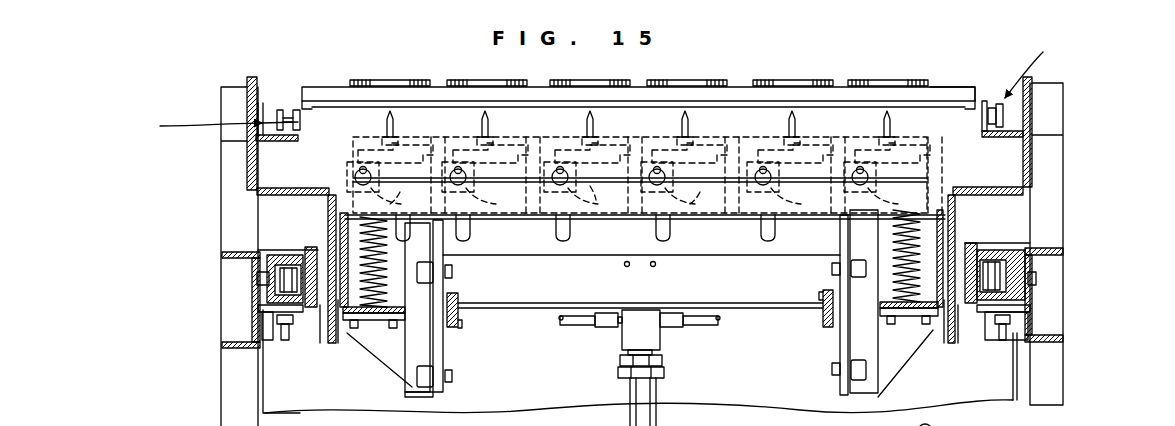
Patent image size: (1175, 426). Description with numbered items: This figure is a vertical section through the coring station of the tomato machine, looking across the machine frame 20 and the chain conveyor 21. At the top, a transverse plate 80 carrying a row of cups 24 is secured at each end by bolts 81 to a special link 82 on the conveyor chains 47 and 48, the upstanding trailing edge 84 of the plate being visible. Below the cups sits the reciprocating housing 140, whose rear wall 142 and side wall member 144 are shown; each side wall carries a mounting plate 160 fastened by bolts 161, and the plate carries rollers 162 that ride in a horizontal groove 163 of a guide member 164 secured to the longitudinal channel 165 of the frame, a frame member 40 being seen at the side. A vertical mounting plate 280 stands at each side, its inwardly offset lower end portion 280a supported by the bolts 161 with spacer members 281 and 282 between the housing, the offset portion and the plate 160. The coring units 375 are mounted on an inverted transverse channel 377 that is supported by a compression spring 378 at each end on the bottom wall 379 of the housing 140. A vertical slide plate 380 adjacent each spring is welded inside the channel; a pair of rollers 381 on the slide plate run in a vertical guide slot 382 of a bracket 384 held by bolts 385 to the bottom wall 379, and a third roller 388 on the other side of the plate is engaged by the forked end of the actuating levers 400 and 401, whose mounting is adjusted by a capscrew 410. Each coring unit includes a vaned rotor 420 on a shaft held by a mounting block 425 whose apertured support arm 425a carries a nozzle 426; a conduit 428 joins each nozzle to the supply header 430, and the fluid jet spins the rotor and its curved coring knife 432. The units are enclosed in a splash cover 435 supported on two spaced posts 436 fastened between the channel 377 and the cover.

The machine frame 20 is at (220, 378).
The chain conveyor 21 is at (598, 88).
The cup 24 is at (565, 80).
The side rail 40 is at (1045, 311).
The conveyor chain 47 is at (288, 110).
The conveyor chain 48 is at (993, 106).
The plate 80 is at (340, 87).
The bolt 81 is at (312, 108).
The special link 82 is at (299, 125).
The trailing edge 84 is at (936, 87).
The housing 140 is at (546, 302).
The rear wall 142 is at (660, 301).
The side wall member 144 is at (955, 215).
The mounting plate 160 is at (300, 236).
The bolt 161 is at (305, 250).
The roller 162 is at (282, 284).
The horizontal groove 163 is at (270, 272).
The guide member 164 is at (290, 305).
The longitudinal channel 165 is at (262, 325).
The mounting plate 280 is at (247, 100).
The offset lower end portion 280a is at (326, 204).
The spacer member 281 is at (321, 308).
The spacer member 282 is at (338, 308).
The coring unit 375 is at (482, 124).
The inverted channel 377 is at (527, 216).
The compression spring 378 is at (388, 238).
The bottom wall 379 is at (405, 309).
The slide plate 380 is at (443, 345).
The roller 381 is at (440, 272).
The vertical guide slot 382 is at (855, 340).
The bracket 384 is at (393, 328).
The bolt 385 is at (900, 378).
The third roller 388 is at (460, 297).
The actuating lever 400 is at (462, 325).
The actuating lever 401 is at (825, 292).
The capscrew 410 is at (904, 420).
The vaned rotor 420 is at (575, 148).
The mounting block 425 is at (480, 190).
The support arm 425a is at (568, 216).
The nozzle 426 is at (597, 191).
The conduit 428 is at (760, 238).
The supply header 430 is at (630, 342).
The coring knife 432 is at (585, 118).
The splash cover 435 is at (352, 143).
The post 436 is at (360, 166).